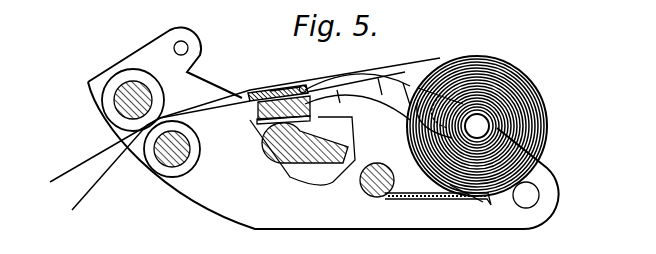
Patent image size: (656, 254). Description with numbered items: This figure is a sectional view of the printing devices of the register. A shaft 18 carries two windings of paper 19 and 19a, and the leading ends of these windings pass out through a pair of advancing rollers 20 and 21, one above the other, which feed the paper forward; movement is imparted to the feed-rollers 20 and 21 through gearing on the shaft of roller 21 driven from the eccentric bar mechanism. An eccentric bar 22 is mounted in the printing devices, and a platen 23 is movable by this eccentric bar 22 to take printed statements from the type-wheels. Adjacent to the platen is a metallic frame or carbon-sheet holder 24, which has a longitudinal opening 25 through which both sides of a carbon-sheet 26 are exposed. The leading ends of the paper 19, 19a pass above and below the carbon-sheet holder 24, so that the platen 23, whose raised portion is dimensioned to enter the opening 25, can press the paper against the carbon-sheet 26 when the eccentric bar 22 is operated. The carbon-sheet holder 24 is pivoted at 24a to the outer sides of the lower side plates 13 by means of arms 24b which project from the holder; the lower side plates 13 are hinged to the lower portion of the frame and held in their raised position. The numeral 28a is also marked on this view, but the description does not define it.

The lower side plates 13 is at (323, 128).
The shaft 18 is at (489, 126).
The winding of paper 19 is at (60, 172).
The winding of paper 19a is at (97, 188).
The advancing roller 20 is at (155, 90).
The advancing roller 21 is at (197, 165).
The eccentric bar 22 is at (280, 155).
The platen 23 is at (312, 108).
The carbon-sheet holder 24 is at (300, 88).
The pivot of carbon-sheet holder 24a is at (412, 130).
The arms of carbon-sheet holder 24b is at (425, 88).
The longitudinal opening 25 is at (284, 90).
The carbon-sheet 26 is at (265, 91).
The spring arm 28a is at (262, 123).